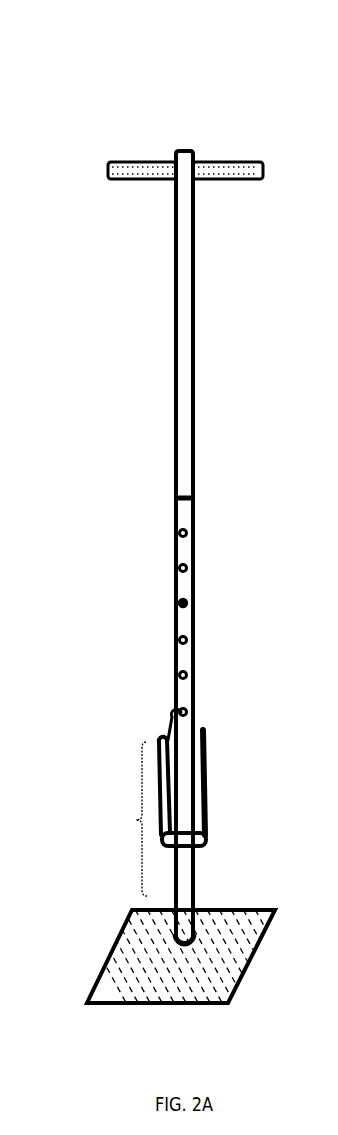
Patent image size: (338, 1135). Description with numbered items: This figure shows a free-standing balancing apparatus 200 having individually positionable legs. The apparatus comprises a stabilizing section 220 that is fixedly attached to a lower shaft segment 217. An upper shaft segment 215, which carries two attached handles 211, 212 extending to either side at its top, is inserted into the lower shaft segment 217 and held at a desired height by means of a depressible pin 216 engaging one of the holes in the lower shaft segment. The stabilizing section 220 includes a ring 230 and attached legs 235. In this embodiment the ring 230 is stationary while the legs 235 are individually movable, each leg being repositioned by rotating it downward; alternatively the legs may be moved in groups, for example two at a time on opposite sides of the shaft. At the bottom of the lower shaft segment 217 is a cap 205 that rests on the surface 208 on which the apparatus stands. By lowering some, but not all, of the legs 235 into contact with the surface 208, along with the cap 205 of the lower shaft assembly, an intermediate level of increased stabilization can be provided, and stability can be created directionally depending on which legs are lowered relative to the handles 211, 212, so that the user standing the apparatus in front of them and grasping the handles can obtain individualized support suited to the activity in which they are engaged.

The balancing apparatus 200 is at (106, 124).
The handle 211 is at (138, 183).
The handle 212 is at (224, 183).
The upper shaft segment 215 is at (176, 382).
The lower shaft segment 217 is at (172, 511).
The depressible pin 216 is at (177, 603).
The leg 235 is at (207, 736).
The ring 230 is at (210, 838).
The stabilizing section 220 is at (121, 819).
The cap 205 is at (170, 941).
The surface 208 is at (135, 978).